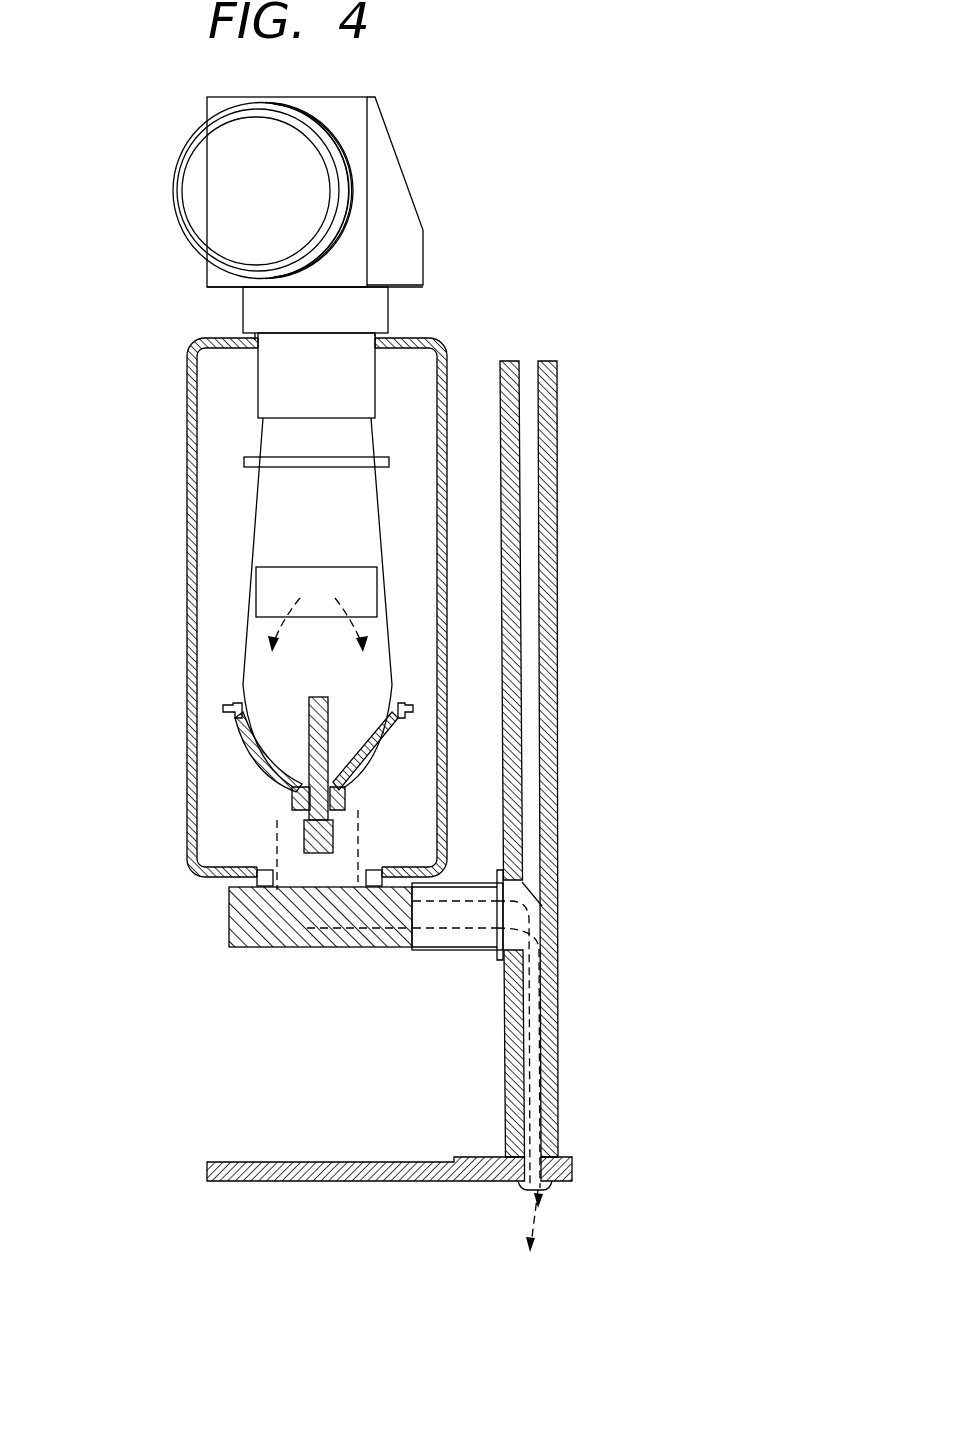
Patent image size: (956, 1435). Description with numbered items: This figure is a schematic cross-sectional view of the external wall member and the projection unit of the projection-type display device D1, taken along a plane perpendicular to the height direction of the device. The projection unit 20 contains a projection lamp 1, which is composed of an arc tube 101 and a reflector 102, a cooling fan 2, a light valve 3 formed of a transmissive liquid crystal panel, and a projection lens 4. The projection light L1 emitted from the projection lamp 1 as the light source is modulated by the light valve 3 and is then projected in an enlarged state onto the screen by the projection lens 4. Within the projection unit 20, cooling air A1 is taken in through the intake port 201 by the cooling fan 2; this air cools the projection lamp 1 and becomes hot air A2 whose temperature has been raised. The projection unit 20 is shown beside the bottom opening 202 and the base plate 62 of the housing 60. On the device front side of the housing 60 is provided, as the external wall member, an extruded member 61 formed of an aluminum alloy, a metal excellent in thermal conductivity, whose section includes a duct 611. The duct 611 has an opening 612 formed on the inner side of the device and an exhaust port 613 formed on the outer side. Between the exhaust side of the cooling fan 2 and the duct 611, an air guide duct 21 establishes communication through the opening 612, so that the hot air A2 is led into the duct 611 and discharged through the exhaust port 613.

The projection lens 4 is at (222, 288).
The projection unit 20 is at (166, 408).
The light valve 3 is at (243, 463).
The projection light L1 is at (253, 527).
The intake port 201 is at (270, 587).
The cooling air A1 is at (257, 615).
The projection lamp 1 is at (236, 775).
The reflector 102 is at (243, 750).
The arc tube 101 is at (305, 818).
The bottom opening of housing 202 is at (257, 853).
The cooling fan 2 is at (229, 920).
The hot air A2 is at (317, 925).
The opening 612 is at (493, 913).
The air guide duct 21 is at (487, 950).
The housing 60 is at (446, 823).
The extruded member 61 is at (557, 752).
The duct 611 is at (532, 833).
The floor plate 62 is at (395, 1182).
The exhaust port 613 is at (530, 1195).
The projection-type display device D1 is at (180, 1206).